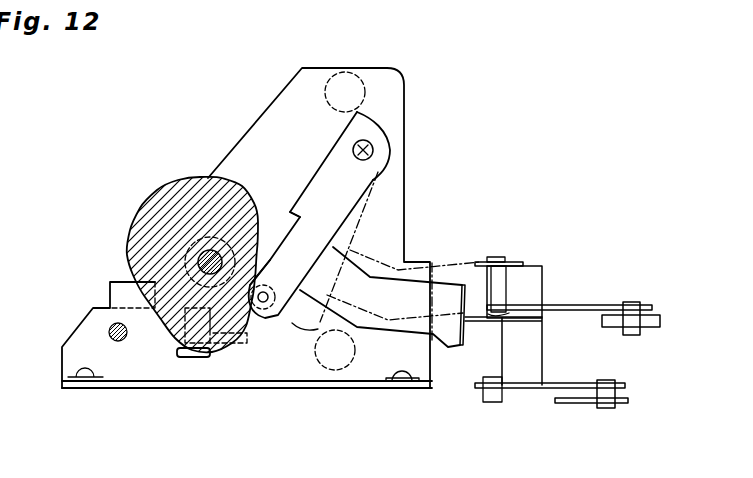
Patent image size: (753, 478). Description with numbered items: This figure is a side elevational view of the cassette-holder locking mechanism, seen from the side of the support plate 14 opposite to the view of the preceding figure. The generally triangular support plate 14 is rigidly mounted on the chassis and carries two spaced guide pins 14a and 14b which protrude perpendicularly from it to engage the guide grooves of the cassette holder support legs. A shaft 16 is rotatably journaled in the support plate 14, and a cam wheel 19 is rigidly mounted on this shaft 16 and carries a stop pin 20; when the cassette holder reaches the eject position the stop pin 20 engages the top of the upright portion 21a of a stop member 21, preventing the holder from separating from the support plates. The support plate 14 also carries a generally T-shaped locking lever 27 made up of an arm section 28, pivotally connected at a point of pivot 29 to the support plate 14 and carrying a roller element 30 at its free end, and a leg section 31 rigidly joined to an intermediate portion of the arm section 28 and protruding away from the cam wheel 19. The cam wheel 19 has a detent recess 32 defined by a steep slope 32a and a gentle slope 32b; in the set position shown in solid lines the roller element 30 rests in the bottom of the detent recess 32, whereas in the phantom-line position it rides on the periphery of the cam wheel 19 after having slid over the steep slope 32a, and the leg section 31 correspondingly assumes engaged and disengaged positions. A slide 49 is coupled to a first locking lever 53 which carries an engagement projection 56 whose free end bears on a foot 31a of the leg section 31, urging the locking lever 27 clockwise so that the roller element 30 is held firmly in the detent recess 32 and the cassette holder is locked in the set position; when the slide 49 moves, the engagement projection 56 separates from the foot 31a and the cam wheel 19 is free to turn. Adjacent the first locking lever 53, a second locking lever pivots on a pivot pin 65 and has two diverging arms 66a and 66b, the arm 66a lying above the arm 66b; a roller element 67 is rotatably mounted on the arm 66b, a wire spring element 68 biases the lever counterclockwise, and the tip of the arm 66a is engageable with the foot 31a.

The support plate 14 is at (390, 86).
The guide pin 14a is at (357, 74).
The guide pin 14b is at (340, 366).
The shaft 16 is at (205, 257).
The cam wheel 19 is at (182, 179).
The stop pin 20 is at (233, 342).
The stop member 21 is at (103, 295).
The upright portion 21a is at (102, 292).
The locking lever 27 is at (362, 220).
The arm section 28 is at (367, 178).
The point of pivot 29 is at (373, 148).
The roller element 30 is at (277, 309).
The leg section 31 is at (407, 335).
The foot 31a is at (472, 262).
The detent recess 32 is at (261, 229).
The steep slope 32a is at (262, 312).
The gentle slope 32b is at (259, 225).
The slide 49 is at (562, 404).
The first locking lever 53 is at (572, 382).
The engagement projection 56 is at (487, 320).
The pivot pin 65 is at (508, 257).
The arm 66a is at (524, 263).
The arm 66b is at (605, 306).
The roller element 67 is at (661, 320).
The spring element 68 is at (508, 296).